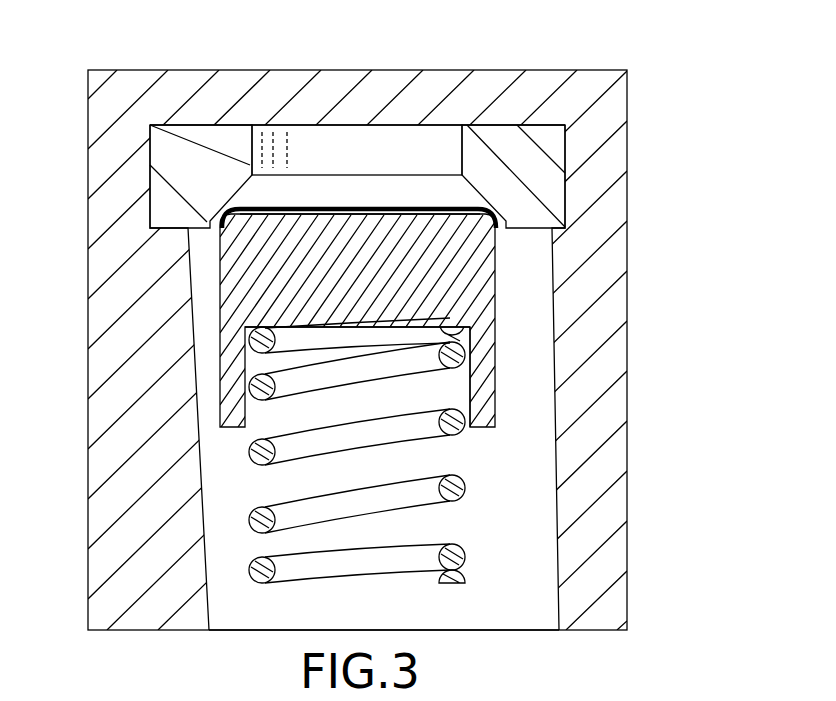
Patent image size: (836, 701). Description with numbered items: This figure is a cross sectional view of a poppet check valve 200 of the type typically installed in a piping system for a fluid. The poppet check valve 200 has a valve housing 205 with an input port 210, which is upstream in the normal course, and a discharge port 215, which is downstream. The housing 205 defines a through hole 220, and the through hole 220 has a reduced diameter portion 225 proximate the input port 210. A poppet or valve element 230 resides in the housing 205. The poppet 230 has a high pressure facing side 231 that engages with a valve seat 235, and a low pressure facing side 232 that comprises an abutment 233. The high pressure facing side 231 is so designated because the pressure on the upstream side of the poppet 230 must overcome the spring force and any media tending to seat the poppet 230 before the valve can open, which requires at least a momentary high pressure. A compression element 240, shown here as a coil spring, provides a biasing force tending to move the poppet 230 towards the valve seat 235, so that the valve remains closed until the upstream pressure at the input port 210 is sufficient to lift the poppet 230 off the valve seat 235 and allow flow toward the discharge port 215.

The poppet check valve 200 is at (683, 100).
The valve housing 205 is at (617, 348).
The input port 210 is at (287, 113).
The discharge port 215 is at (457, 642).
The through hole 220 is at (373, 165).
The reduced diameter portion 225 is at (455, 149).
The poppet 230 is at (373, 274).
The high pressure facing side 231 is at (418, 210).
The low pressure facing side 232 is at (443, 323).
The abutment 233 is at (315, 327).
The valve seat 235 is at (495, 205).
The compression element 240 is at (465, 483).